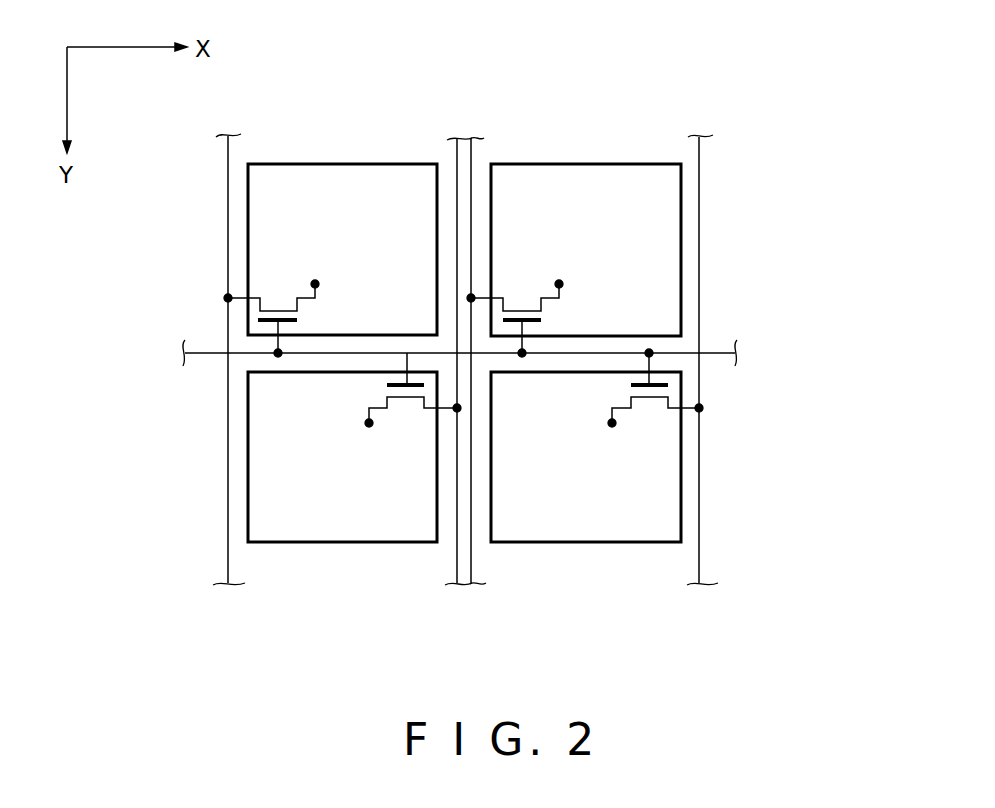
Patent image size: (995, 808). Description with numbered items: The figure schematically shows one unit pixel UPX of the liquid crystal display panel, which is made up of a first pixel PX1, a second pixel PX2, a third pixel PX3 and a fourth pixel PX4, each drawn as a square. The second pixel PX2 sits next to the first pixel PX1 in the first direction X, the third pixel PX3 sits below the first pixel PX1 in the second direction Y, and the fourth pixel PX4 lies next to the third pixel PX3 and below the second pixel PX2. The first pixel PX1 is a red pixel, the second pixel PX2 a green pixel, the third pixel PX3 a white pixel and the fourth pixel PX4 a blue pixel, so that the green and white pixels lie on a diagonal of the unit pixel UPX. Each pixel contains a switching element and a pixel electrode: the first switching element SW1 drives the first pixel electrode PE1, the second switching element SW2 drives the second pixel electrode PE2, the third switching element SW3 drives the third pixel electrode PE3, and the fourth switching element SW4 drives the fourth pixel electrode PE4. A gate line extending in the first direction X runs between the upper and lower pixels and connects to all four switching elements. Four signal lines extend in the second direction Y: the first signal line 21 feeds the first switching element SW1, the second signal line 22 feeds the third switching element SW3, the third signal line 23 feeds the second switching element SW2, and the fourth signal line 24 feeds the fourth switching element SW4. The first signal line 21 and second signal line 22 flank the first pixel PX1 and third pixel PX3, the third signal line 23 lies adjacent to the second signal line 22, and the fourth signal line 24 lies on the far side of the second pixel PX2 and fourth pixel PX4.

The first signal line 21 is at (230, 555).
The second signal line 22 is at (457, 560).
The third signal line 23 is at (471, 560).
The fourth signal line 24 is at (697, 555).
The first pixel electrode PE1 is at (248, 243).
The second pixel electrode PE2 is at (681, 243).
The third pixel electrode PE3 is at (248, 493).
The fourth pixel electrode PE4 is at (681, 493).
The first switching element SW1 is at (268, 290).
The second switching element SW2 is at (575, 305).
The third switching element SW3 is at (351, 412).
The fourth switching element SW4 is at (658, 423).
The first pixel PX1 is at (341, 136).
The second pixel PX2 is at (580, 136).
The third pixel PX3 is at (339, 572).
The fourth pixel PX4 is at (581, 572).
The unit pixel UPX is at (757, 159).